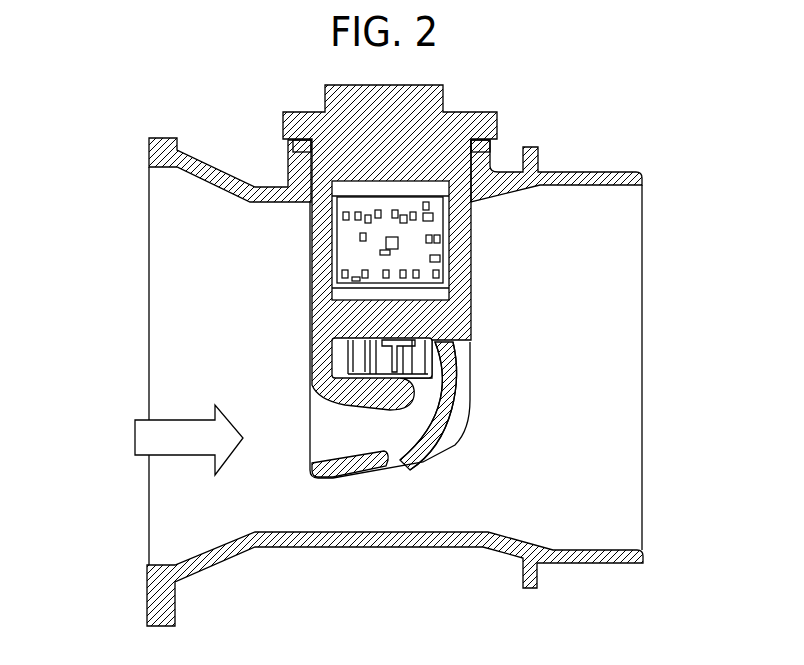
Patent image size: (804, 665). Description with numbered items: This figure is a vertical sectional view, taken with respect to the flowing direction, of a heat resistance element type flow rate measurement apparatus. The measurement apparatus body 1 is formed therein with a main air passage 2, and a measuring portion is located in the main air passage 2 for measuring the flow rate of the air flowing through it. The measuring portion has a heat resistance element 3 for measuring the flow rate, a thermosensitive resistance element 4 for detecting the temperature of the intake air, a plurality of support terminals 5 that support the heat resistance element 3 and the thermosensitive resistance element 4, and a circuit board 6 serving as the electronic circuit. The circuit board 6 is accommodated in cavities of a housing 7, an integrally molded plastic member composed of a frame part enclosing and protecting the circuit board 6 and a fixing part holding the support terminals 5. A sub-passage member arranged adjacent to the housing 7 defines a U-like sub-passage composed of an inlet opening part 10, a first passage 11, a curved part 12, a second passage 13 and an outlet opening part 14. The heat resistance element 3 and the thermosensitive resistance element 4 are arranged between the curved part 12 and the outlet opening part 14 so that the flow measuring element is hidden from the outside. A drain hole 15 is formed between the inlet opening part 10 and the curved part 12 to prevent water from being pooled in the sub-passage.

The measurement apparatus body 1 is at (266, 187).
The main air passage 2 is at (152, 222).
The heat resistance element 3 is at (345, 373).
The thermosensitive resistance element 4 is at (455, 367).
The support terminals 5 is at (443, 393).
The circuit board 6 is at (386, 243).
The housing 7 is at (473, 232).
The inlet opening part 10 is at (310, 452).
The first passage 11 is at (322, 413).
The curved part 12 is at (420, 427).
The second passage 13 is at (408, 338).
The outlet opening part 14 is at (368, 345).
The drain hole 15 is at (386, 465).